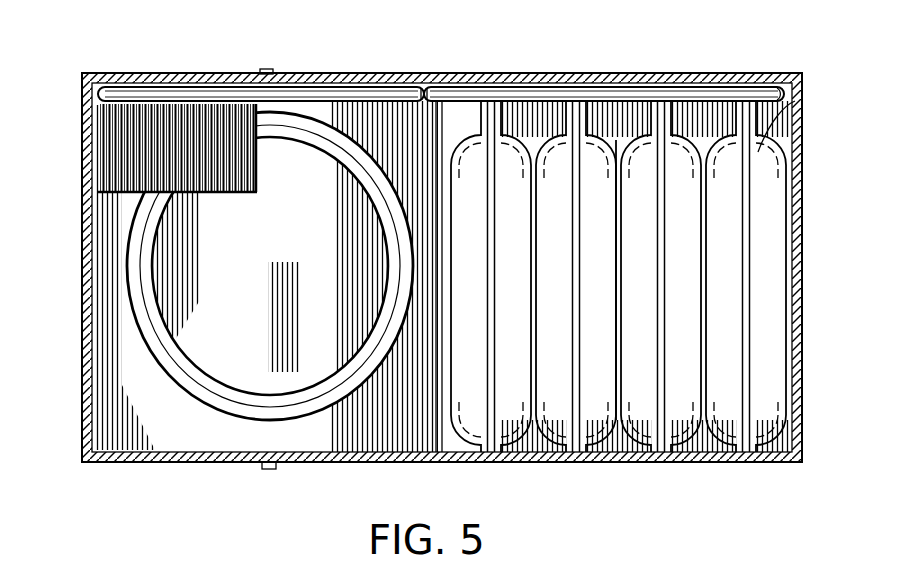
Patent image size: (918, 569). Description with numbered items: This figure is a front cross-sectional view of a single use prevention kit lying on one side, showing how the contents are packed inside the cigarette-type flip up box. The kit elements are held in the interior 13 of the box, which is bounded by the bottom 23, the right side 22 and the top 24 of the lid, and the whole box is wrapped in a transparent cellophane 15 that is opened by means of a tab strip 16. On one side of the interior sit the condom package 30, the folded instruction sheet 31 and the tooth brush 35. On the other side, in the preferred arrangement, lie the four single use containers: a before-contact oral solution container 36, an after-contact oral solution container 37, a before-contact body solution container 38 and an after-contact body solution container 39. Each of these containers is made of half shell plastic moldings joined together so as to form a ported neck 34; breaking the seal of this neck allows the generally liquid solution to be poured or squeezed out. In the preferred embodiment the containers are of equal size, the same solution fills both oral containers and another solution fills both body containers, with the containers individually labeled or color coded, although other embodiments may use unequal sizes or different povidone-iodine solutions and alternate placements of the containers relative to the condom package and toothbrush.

The interior space 13 is at (93, 307).
The cellophane wrapping 15 is at (110, 75).
The tab strip 16 is at (267, 69).
The right side 22 is at (543, 74).
The bottom 23 is at (795, 292).
The top 24 is at (88, 250).
The condom package 30 is at (351, 152).
The folded instruction sheet 31 is at (618, 170).
The ported neck 34 is at (795, 101).
The tooth brush 35 is at (668, 97).
The before-contact oral solution container 36 is at (643, 413).
The after-contact oral solution container 37 is at (731, 413).
The before-contact body solution container 38 is at (477, 413).
The after-contact body solution container 39 is at (558, 413).